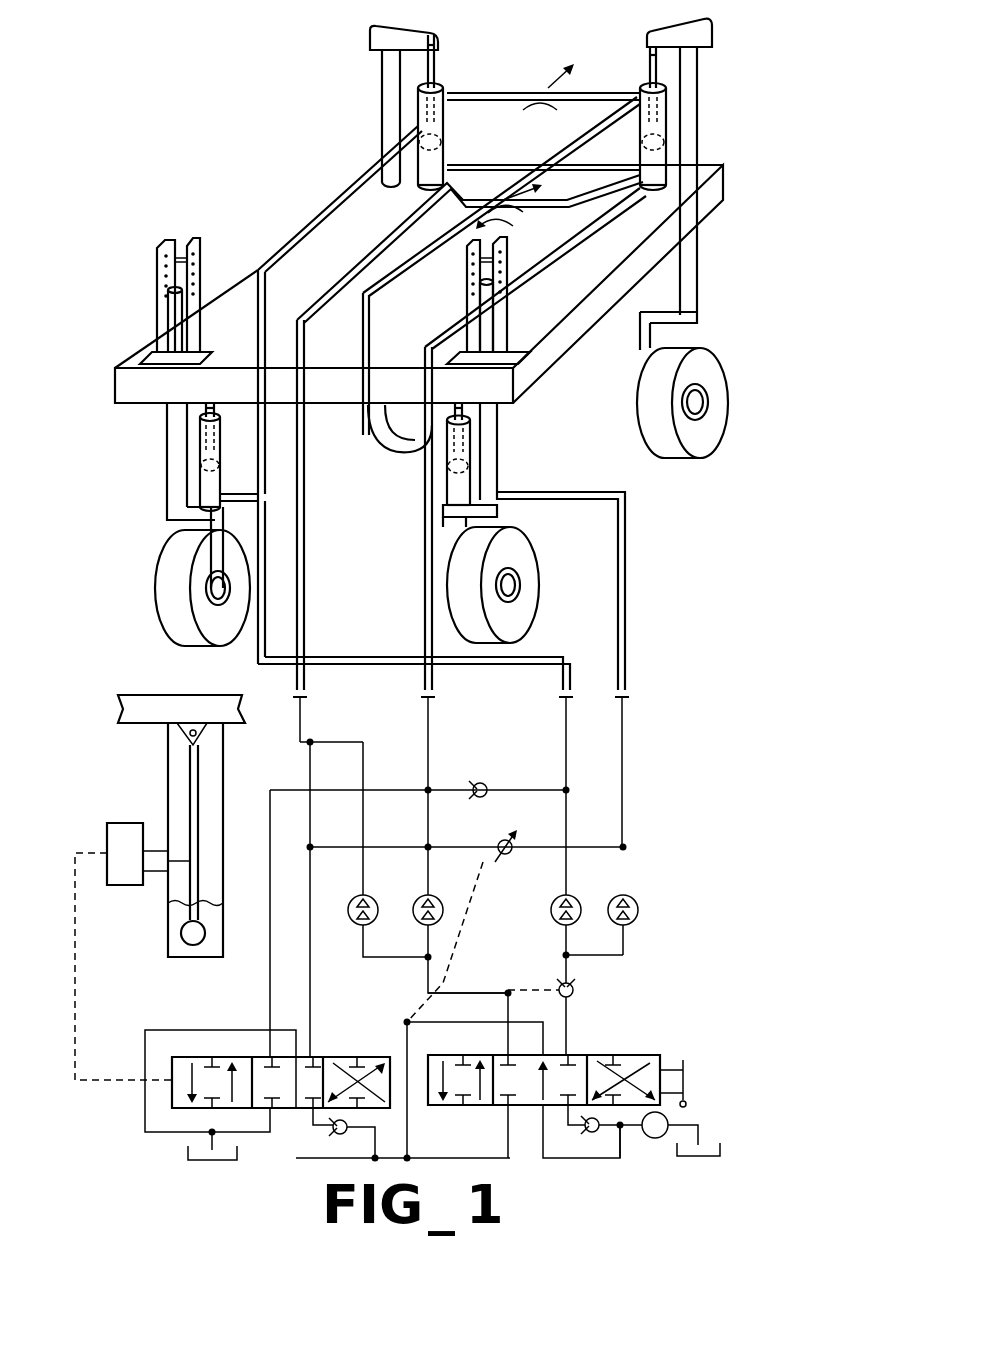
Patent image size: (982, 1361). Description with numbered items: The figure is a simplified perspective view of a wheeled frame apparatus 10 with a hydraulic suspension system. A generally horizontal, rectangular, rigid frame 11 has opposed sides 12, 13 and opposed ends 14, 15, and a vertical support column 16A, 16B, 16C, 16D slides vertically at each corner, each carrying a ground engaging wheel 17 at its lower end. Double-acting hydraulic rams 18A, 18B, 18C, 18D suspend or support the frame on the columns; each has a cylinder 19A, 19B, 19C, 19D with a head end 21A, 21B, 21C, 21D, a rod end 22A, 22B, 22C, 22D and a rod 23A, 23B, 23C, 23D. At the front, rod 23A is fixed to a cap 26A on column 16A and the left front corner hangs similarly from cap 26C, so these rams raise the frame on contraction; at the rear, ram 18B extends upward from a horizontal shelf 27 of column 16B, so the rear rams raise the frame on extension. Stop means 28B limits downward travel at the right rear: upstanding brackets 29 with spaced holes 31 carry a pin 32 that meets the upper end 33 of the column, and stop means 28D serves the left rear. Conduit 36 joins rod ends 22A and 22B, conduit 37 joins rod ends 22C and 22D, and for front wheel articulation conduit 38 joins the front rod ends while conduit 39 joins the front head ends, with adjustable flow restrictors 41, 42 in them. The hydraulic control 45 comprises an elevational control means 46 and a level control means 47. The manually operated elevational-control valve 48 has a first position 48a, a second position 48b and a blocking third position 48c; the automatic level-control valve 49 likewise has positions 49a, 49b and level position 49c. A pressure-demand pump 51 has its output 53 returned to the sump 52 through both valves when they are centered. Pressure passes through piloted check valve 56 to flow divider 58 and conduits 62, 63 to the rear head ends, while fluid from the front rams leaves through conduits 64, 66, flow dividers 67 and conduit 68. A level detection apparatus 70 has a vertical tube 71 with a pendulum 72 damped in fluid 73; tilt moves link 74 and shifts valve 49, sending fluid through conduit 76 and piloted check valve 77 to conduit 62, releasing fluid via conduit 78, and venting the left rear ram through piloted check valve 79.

The wheeled frame apparatus 10 is at (254, 215).
The frame 11 is at (313, 221).
The side 12 is at (600, 316).
The side 13 is at (262, 278).
The end 14 is at (472, 167).
The end 15 is at (278, 397).
The first vertical support column 16A is at (699, 262).
The second vertical support column 16B is at (499, 432).
The third vertical support column 16C is at (382, 86).
The fourth vertical support column 16D is at (167, 465).
The ground engaging wheel 17 is at (385, 417).
The hydraulic ram 18A is at (667, 107).
The hydraulic ram 18B is at (471, 470).
The hydraulic ram 18C is at (417, 122).
The hydraulic ram 18D is at (199, 488).
The cylinder 19A is at (640, 157).
The cylinder 19B is at (450, 469).
The cylinder 19C is at (420, 143).
The cylinder 19D is at (222, 471).
The head end 21A is at (641, 186).
The head end 21B is at (452, 501).
The head end 21C is at (417, 190).
The head end 21D is at (217, 506).
The rod end 22A is at (648, 84).
The rod end 22B is at (455, 432).
The rod end 22C is at (440, 86).
The rod end 22D is at (232, 393).
The rod 23A is at (648, 52).
The rod 23B is at (476, 390).
The rod 23C is at (437, 52).
The rod 23D is at (204, 406).
The cap 26A is at (712, 30).
The cap 26C is at (370, 43).
The horizontal shelf 27 is at (458, 516).
The stop means 28B is at (514, 293).
The stop means 28D is at (222, 336).
The upstanding brackets 29 is at (500, 320).
The holes 31 is at (512, 283).
The pin 32 is at (510, 262).
The upper end 33 is at (480, 290).
The conduit 36 is at (368, 300).
The conduit 37 is at (290, 254).
The conduit 38 is at (587, 104).
The conduit 39 is at (535, 192).
The adjustable flow restrictor 41 is at (538, 92).
The adjustable flow restrictor 42 is at (509, 228).
The hydraulic control 45 is at (655, 697).
The elevational control means 46 is at (641, 995).
The level control means 47 is at (166, 992).
The elevational-control valve 48 is at (562, 1085).
The first position 48a is at (472, 1105).
The second position 48b is at (672, 1032).
The third position 48c is at (506, 1076).
The level-control valve 49 is at (275, 1054).
The first position 49a is at (178, 1073).
The second position 49b is at (422, 1043).
The third position 49c is at (222, 1054).
The hydraulic pump 51 is at (687, 1107).
The sump 52 is at (185, 1148).
The output 53 is at (637, 1140).
The piloted check valve 56 is at (575, 990).
The flow divider 58 is at (612, 949).
The conduit 62 is at (628, 615).
The conduit 63 is at (566, 657).
The conduit 64 is at (425, 607).
The conduit 66 is at (306, 640).
The flow dividers 67 is at (410, 949).
The conduit 68 is at (479, 995).
The level detection apparatus 70 is at (129, 782).
The vertical tube 71 is at (220, 778).
The pendulum 72 is at (200, 820).
The damping fluid 73 is at (212, 922).
The link 74 is at (160, 868).
The conduit 76 is at (310, 958).
The piloted check valve 77 is at (513, 860).
The conduit 78 is at (270, 848).
The piloted check valve 79 is at (484, 782).